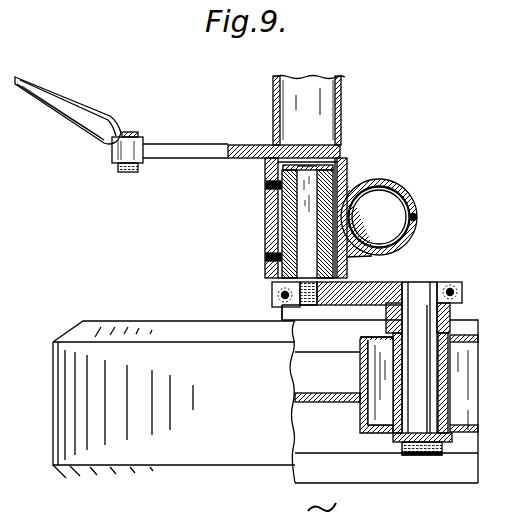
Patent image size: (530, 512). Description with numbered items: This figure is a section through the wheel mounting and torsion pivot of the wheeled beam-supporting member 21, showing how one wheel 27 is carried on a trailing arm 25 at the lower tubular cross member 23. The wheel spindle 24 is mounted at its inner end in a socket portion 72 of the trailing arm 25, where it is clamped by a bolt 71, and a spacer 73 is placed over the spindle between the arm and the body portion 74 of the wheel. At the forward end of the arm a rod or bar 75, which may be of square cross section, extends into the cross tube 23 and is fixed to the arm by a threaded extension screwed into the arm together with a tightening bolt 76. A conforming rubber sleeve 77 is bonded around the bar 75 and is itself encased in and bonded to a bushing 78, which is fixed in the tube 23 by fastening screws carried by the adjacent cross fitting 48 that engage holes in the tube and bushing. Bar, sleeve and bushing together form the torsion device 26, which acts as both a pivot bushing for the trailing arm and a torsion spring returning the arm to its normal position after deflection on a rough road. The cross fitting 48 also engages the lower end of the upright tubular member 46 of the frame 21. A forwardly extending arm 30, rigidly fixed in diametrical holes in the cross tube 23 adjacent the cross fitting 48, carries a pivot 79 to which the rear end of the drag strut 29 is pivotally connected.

The wheeled beam-supporting member 21 is at (417, 191).
The lower tubular cross member 23 is at (338, 100).
The wheel spindle 24 is at (412, 408).
The trailing arm 25 is at (357, 300).
The torsion device 26 is at (303, 257).
The wheel 27 is at (160, 338).
The drag strut 29 is at (73, 97).
The forwardly extending arm 30 is at (201, 150).
The upright tubular member 46 is at (416, 215).
The cross fitting 48 is at (400, 250).
The bolt 71 is at (456, 292).
The socket portion 72 is at (438, 283).
The spacer 73 is at (450, 318).
The body portion of the wheel 74 is at (465, 343).
The rod or bar 75 is at (307, 220).
The tightening bolt 76 is at (282, 308).
The rubber sleeve 77 is at (324, 193).
The bushing 78 is at (282, 196).
The pivot 79 is at (134, 134).